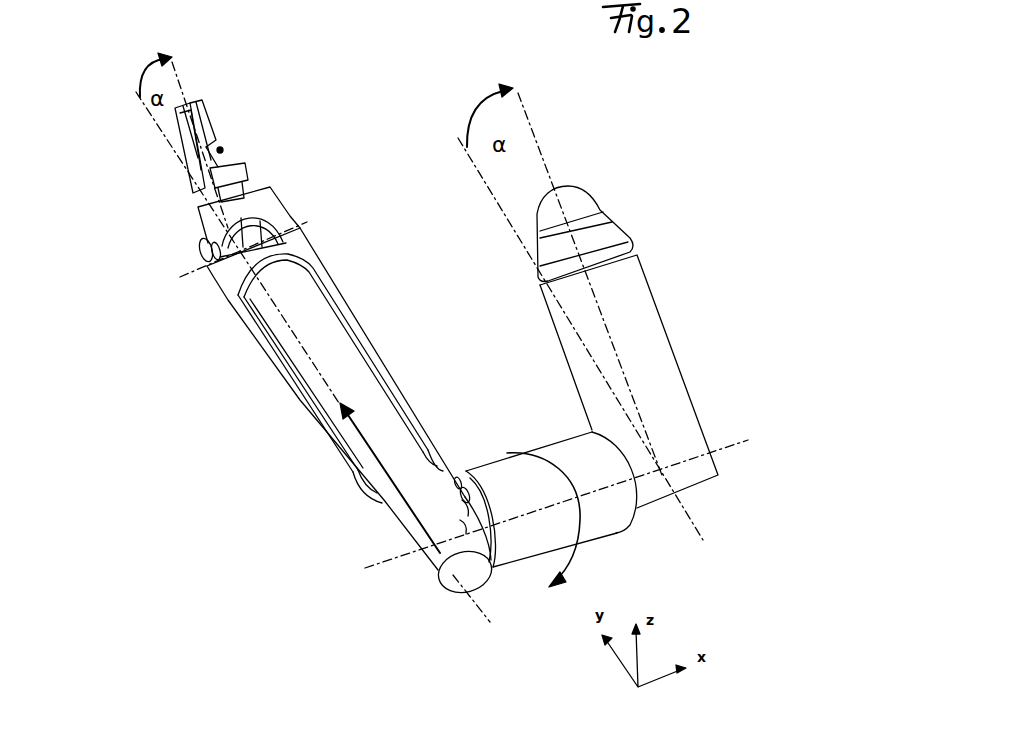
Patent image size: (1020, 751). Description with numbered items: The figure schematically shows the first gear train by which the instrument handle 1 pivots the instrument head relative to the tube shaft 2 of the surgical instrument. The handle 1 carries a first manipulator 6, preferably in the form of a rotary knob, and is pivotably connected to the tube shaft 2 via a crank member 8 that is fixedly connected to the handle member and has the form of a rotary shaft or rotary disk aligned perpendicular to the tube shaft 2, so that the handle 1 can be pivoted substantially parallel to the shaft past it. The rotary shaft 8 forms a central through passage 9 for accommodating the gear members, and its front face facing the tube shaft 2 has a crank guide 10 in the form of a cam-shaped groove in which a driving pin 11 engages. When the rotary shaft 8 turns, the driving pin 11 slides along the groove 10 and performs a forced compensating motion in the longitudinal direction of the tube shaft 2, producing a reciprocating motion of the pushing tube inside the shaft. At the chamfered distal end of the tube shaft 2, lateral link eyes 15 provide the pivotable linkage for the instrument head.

The instrument handle 1 is at (650, 343).
The tube shaft 2 is at (348, 312).
The first manipulator 6 is at (612, 225).
The crank member 8 is at (524, 541).
The central through passage 9 is at (467, 527).
The crank guide 10 is at (459, 478).
The driving pin 11 is at (466, 488).
The lateral link eyes 15 is at (203, 243).